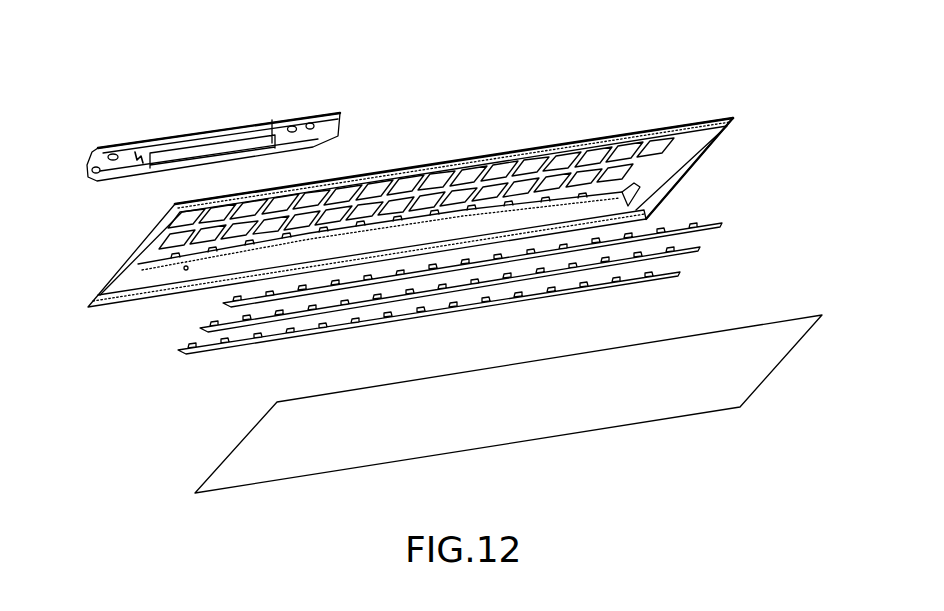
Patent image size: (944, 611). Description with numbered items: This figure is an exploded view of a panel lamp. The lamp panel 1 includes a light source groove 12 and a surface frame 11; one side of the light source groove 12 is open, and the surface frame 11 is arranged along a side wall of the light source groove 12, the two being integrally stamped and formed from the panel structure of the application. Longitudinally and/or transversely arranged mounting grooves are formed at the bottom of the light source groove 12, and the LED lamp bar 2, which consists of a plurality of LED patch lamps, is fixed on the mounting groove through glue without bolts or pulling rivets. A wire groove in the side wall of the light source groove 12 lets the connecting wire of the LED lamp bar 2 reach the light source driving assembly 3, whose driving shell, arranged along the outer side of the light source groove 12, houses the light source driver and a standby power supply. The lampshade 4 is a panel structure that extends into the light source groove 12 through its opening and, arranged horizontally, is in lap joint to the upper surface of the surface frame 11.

The lamp panel 1 is at (812, 115).
The surface frame 11 is at (693, 125).
The light source groove 12 is at (657, 157).
The LED lamp bar 2 is at (652, 232).
The light source driving assembly 3 is at (319, 113).
The lampshade 4 is at (642, 373).